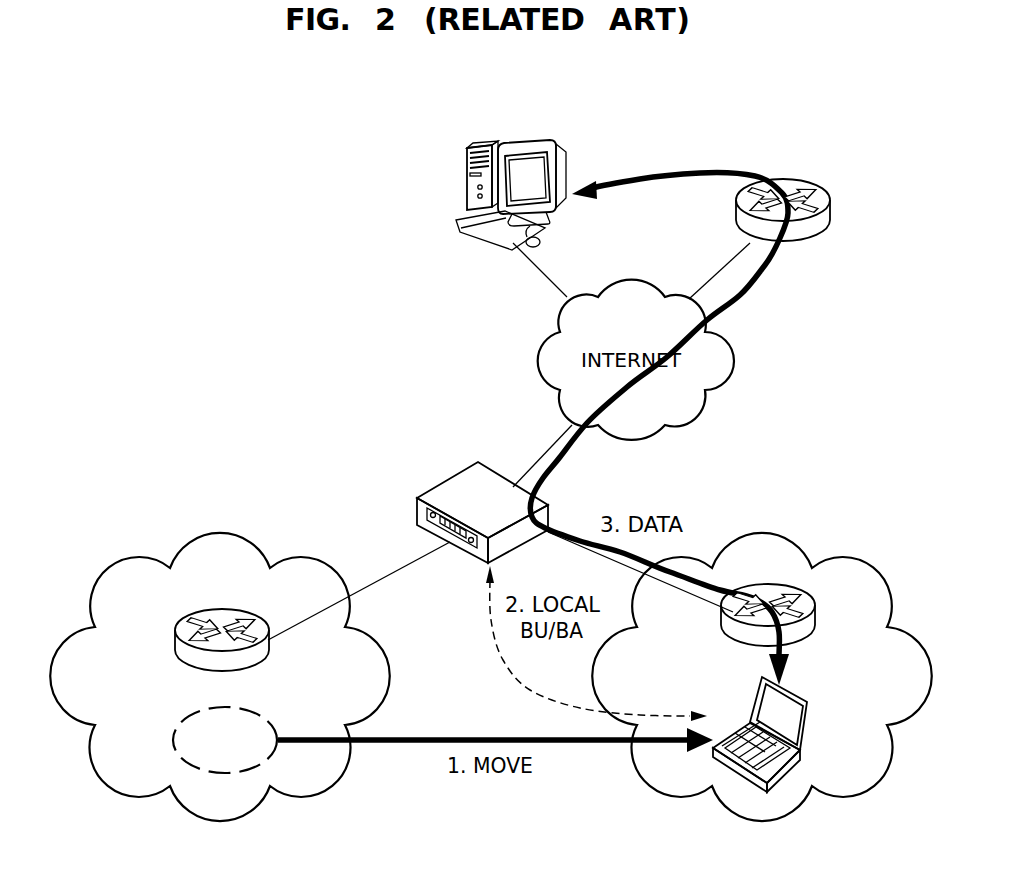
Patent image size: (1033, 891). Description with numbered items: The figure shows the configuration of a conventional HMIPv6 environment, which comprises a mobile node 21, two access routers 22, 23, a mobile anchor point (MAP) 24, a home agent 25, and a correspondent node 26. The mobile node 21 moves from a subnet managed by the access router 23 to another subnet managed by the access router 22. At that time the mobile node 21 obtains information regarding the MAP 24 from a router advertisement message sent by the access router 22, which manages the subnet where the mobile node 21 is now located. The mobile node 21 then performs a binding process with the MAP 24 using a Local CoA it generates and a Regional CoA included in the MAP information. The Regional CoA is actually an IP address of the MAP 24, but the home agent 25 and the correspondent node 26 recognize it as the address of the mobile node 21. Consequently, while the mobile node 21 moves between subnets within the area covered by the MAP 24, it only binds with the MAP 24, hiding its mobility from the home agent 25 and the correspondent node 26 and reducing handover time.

The mobile node 21 is at (822, 723).
The access router 22 is at (817, 605).
The access router 23 is at (227, 610).
The mobile anchor point (MAP) 24 is at (446, 483).
The home agent 25 is at (817, 182).
The correspondent node 26 is at (533, 144).